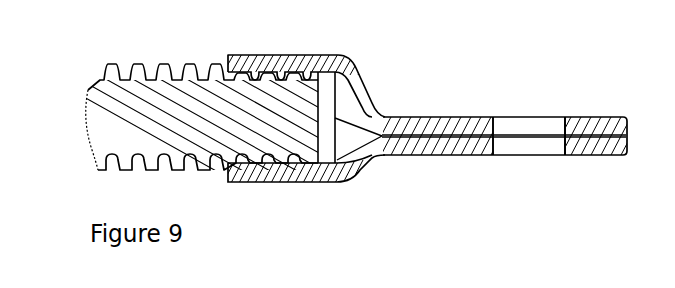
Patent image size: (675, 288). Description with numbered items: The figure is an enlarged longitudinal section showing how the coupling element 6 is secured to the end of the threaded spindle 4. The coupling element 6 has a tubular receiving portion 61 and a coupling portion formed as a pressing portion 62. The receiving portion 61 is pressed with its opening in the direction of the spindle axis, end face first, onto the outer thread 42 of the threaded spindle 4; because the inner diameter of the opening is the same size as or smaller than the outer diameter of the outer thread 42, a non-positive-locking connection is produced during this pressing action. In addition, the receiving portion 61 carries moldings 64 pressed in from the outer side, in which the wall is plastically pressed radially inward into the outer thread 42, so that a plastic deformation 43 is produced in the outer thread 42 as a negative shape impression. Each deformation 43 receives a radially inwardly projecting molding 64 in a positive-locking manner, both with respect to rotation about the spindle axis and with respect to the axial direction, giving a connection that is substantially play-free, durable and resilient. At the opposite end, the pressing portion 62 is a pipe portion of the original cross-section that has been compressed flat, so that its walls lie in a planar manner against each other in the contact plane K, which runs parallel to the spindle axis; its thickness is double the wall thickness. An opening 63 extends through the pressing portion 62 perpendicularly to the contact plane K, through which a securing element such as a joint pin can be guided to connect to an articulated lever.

The threaded spindle 4 is at (269, 113).
The outer thread 42 is at (193, 63).
The plastic deformation 43 is at (269, 66).
The coupling element 6 is at (432, 109).
The receiving portion 61 is at (312, 109).
The pressing portion 62 is at (590, 126).
The opening 63 is at (530, 142).
The molding 64 is at (285, 60).
The contact plane K is at (462, 143).